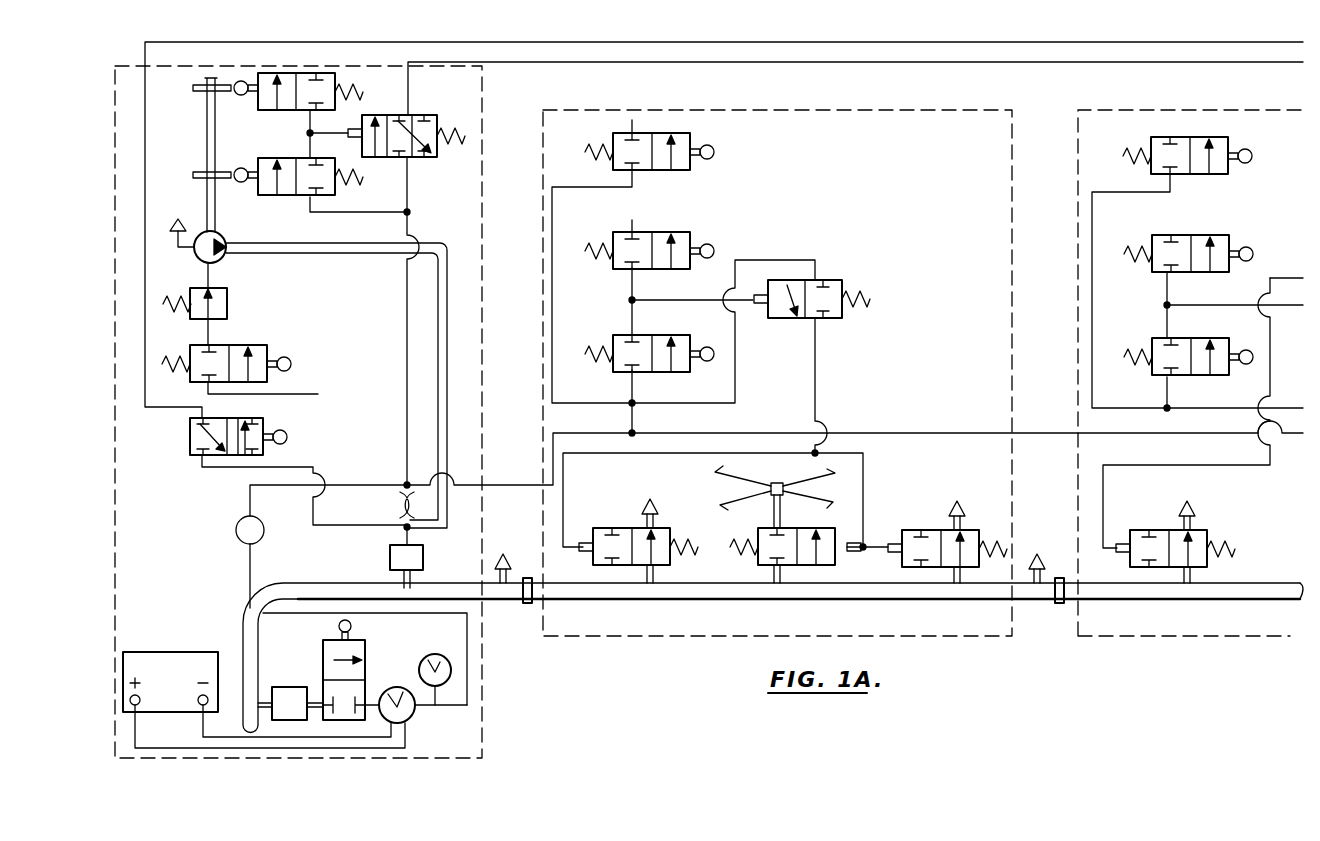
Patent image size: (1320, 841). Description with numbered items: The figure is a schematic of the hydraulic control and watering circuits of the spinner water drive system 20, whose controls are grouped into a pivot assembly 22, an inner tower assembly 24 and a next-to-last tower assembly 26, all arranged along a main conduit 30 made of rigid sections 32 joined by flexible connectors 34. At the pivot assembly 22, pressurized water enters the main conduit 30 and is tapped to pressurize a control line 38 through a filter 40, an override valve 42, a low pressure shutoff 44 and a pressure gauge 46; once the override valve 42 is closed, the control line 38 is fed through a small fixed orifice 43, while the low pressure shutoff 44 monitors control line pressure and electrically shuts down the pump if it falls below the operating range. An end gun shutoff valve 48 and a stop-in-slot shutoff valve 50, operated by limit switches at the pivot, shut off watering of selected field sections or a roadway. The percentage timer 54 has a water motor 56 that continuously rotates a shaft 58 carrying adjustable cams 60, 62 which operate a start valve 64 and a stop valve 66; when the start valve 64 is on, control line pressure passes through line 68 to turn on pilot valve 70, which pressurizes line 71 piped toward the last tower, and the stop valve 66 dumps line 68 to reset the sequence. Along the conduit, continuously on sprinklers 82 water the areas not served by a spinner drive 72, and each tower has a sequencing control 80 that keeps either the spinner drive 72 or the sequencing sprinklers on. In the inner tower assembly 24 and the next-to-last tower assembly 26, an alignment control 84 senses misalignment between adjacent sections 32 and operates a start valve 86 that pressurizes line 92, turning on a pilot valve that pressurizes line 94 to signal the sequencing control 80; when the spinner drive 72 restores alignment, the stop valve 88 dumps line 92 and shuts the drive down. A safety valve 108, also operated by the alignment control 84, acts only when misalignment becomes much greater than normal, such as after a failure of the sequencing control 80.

The spinner water drive system 20 is at (1115, 40).
The pivot assembly 22 is at (488, 165).
The inner tower assembly 24 is at (1015, 148).
The next-to-last tower assembly 26 is at (1218, 108).
The main conduit 30 is at (773, 638).
The rigid section 32 is at (440, 583).
The flexible connector 34 is at (538, 598).
The control line 38 is at (250, 562).
The filter 40 is at (285, 690).
The override valve 42 is at (366, 660).
The small fixed orifice 43 is at (404, 529).
The low pressure shutoff 44 is at (393, 687).
The pressure gauge 46 is at (440, 654).
The end gun shutoff valve 48 is at (190, 448).
The stop-in-slot shutoff valve 50 is at (250, 345).
The percentage timer 54 is at (261, 121).
The water motor 56 is at (226, 261).
The shaft 58 is at (207, 140).
The cam 60 is at (195, 177).
The cam 62 is at (195, 91).
The start valve 64 is at (285, 197).
The stop valve 66 is at (272, 110).
The line 68 is at (340, 130).
The pilot valve 70 is at (425, 115).
The line 71 is at (546, 70).
The spinner drive 72 is at (760, 506).
The sequencing control 80 is at (810, 572).
The continuously on sprinkler 82 is at (507, 553).
The alignment control 84 is at (698, 232).
The start valve 86 is at (1205, 275).
The stop valve 88 is at (1205, 378).
The line 92 is at (1282, 308).
The line 94 is at (1280, 278).
The safety valve 108 is at (1180, 176).